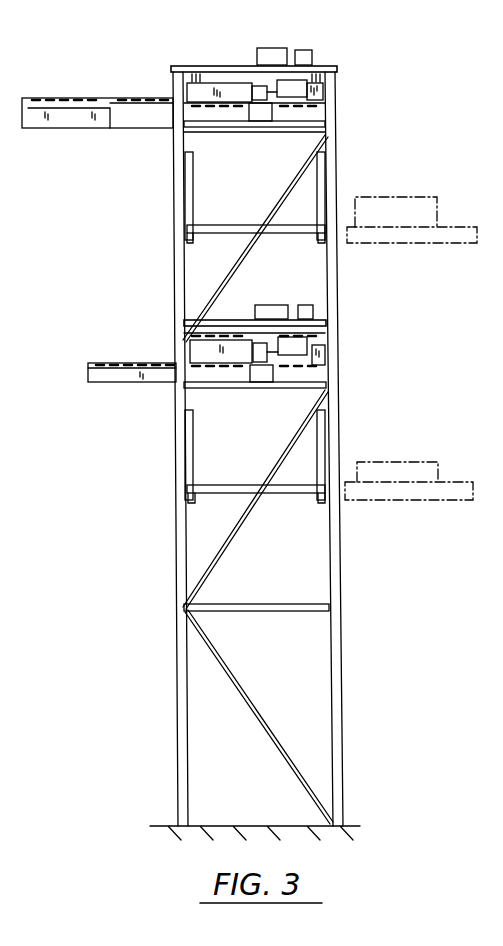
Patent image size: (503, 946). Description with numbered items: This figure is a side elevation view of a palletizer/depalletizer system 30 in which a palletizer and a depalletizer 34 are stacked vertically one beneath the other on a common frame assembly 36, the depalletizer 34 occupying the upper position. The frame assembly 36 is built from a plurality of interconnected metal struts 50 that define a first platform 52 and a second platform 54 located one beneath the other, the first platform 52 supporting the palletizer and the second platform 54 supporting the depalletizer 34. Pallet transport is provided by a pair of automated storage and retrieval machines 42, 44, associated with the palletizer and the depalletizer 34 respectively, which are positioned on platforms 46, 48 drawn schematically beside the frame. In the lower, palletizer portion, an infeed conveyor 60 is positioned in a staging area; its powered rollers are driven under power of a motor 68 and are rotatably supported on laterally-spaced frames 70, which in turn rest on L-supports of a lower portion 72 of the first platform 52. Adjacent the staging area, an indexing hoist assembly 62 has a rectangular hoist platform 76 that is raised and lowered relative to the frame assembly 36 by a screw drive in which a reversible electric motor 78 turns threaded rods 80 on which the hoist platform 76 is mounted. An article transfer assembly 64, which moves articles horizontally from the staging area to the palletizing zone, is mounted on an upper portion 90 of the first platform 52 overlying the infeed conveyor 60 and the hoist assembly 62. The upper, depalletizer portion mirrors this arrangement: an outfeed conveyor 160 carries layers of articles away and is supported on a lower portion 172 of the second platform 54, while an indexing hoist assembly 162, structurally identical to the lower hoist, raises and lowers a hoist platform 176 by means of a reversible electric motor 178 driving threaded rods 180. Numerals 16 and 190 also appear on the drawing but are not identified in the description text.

The drive coupling 16 is at (326, 88).
The palletizer/depalletizer system 30 is at (446, 72).
The depalletizer 34 is at (158, 133).
The frame assembly 36 is at (345, 727).
The automated storage and retrieval machine 42 is at (420, 461).
The automated storage and retrieval machine 44 is at (402, 200).
The platform 46 is at (472, 482).
The platform 48 is at (472, 226).
The metal struts 50 is at (187, 670).
The first platform 52 is at (338, 330).
The second platform 54 is at (323, 64).
The infeed conveyor 60 is at (120, 363).
The indexing hoist assembly 62 is at (287, 497).
The article transfer assembly 64 is at (315, 317).
The motor 68 is at (330, 343).
The frames 70 is at (88, 378).
The lower portion 72 is at (242, 385).
The hoist platform 76 is at (225, 492).
The reversible electric motor 78 is at (285, 280).
The threaded rods 80 is at (185, 455).
The upper portion 90 is at (187, 324).
The outfeed conveyor 160 is at (128, 100).
The indexing hoist assembly 162 is at (298, 241).
The lower portion 172 is at (228, 132).
The hoist platform 176 is at (213, 240).
The reversible electric motor 178 is at (289, 27).
The threaded rods 180 is at (185, 207).
The top plate 190 is at (199, 40).